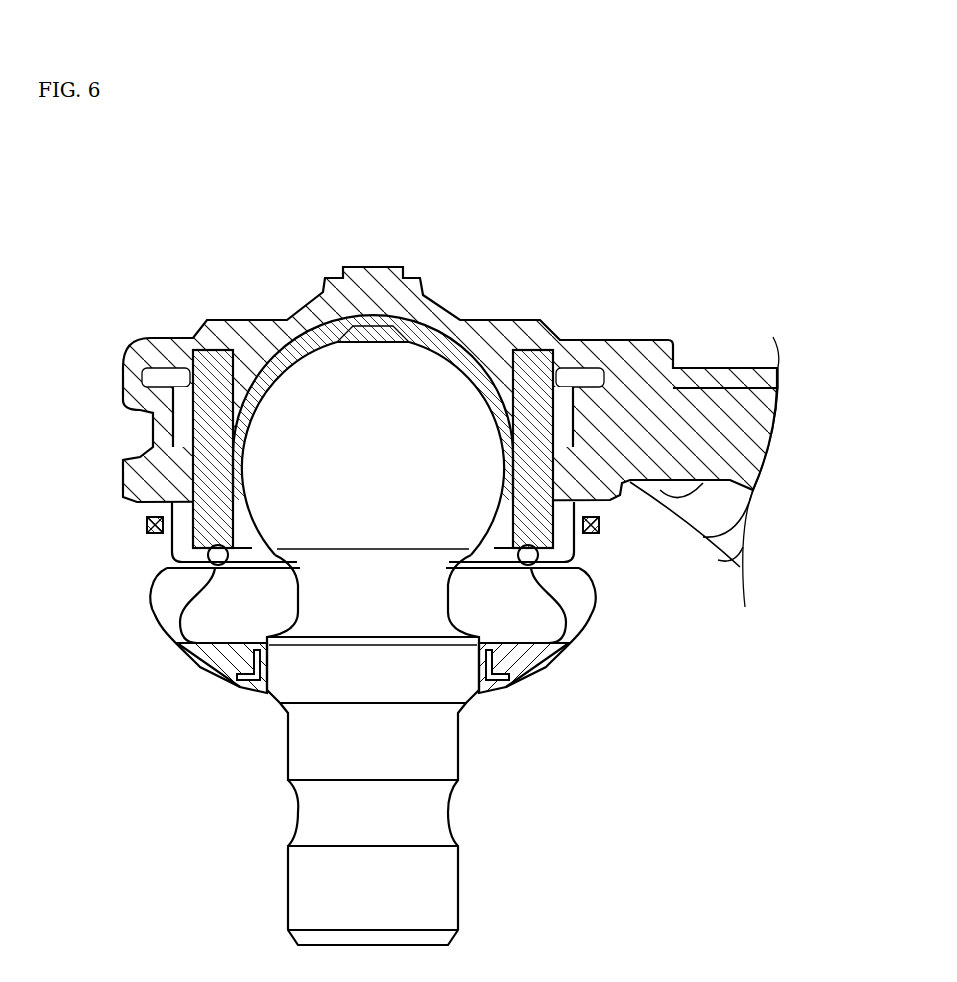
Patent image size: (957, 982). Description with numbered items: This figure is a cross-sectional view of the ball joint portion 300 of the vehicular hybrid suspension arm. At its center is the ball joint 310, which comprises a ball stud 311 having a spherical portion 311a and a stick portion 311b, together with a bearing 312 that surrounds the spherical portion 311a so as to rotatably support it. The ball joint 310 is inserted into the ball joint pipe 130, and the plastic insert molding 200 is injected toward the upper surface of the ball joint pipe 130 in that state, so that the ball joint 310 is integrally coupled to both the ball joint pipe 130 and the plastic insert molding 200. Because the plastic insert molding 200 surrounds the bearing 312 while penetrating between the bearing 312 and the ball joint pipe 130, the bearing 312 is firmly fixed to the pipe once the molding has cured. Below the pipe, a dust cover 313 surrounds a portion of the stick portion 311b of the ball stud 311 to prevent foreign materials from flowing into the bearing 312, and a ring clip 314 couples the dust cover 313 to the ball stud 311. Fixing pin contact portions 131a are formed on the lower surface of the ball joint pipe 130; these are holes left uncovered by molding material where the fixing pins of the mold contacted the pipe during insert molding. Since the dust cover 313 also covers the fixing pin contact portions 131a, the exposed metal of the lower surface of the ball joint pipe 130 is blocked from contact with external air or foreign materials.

The ball joint portion 300 is at (358, 236).
The plastic insert molding 200 is at (253, 330).
The bearing 312 is at (443, 337).
The ball joint pipe 130 is at (533, 417).
The fixing pin contact portions 131a is at (180, 583).
The dust cover 313 is at (190, 653).
The ring clip 314 is at (147, 524).
The ball joint 310 is at (266, 827).
The spherical portion 311a is at (293, 437).
The ball stud 311 is at (455, 748).
The stick portion 311b is at (418, 893).